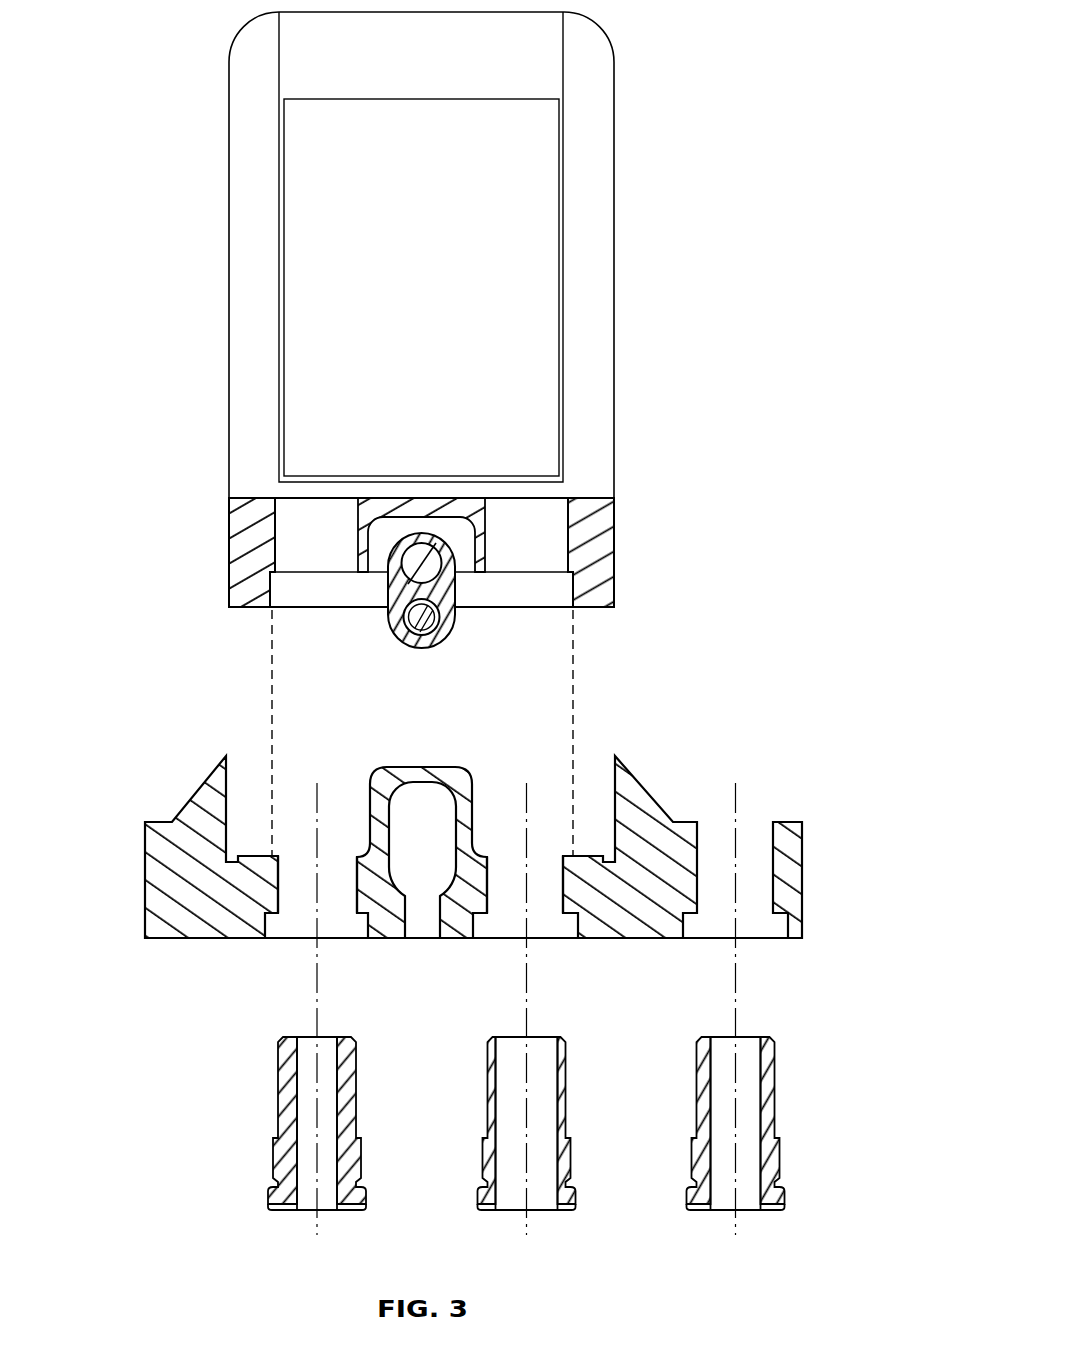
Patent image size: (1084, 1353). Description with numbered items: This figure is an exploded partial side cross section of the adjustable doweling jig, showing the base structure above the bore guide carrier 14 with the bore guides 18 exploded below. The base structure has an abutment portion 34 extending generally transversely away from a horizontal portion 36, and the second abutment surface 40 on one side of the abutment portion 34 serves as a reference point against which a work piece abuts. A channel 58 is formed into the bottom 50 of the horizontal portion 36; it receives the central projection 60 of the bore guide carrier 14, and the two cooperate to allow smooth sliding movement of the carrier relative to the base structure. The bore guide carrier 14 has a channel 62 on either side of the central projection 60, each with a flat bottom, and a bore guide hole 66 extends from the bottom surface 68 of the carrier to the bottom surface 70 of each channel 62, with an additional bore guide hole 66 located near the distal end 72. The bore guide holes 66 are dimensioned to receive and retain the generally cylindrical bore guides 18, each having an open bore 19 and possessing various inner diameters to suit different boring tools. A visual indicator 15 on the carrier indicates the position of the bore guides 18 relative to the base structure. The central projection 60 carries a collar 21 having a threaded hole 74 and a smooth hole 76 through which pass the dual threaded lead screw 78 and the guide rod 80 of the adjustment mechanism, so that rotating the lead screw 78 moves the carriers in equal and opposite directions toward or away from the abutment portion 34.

The bore guide carrier 14 is at (508, 958).
The visual indicator 15 is at (202, 793).
The bore guide 18 is at (524, 1034).
The open bore 19 is at (751, 1020).
The collar 21 is at (542, 595).
The abutment portion 34 is at (613, 123).
The horizontal portion 36 is at (433, 642).
The second abutment surface 40 is at (525, 220).
The bottom 50 is at (240, 607).
The channel 58 is at (487, 523).
The central projection 60 is at (477, 794).
The channel 62 is at (262, 826).
The bore guide hole 66 is at (341, 911).
The bottom surface 68 is at (190, 940).
The bottom surface 70 is at (268, 855).
The distal end 72 is at (802, 830).
The threaded hole 74 is at (443, 630).
The smooth hole 76 is at (443, 577).
The dual threaded lead screw 78 is at (408, 653).
The guide rod 80 is at (420, 560).